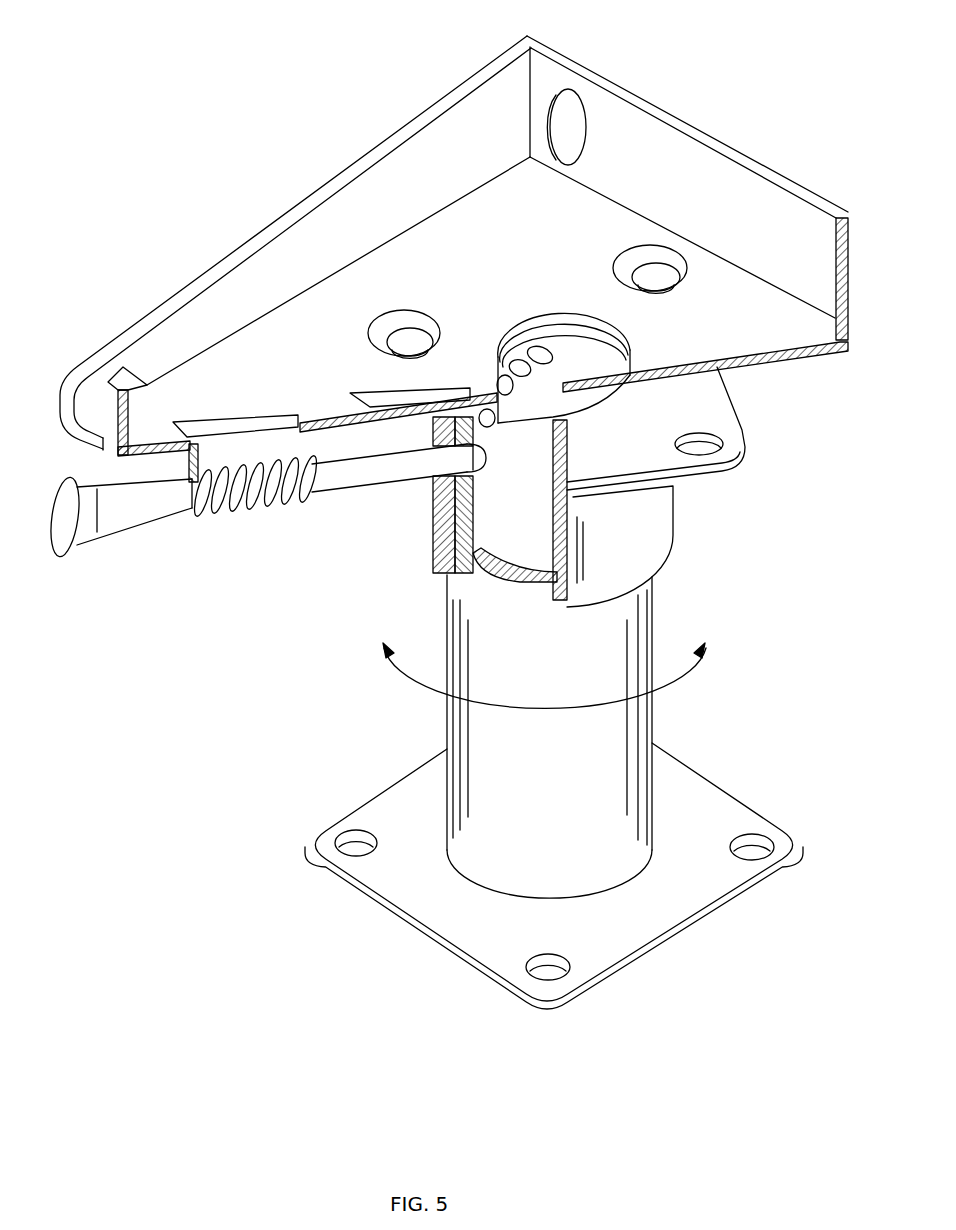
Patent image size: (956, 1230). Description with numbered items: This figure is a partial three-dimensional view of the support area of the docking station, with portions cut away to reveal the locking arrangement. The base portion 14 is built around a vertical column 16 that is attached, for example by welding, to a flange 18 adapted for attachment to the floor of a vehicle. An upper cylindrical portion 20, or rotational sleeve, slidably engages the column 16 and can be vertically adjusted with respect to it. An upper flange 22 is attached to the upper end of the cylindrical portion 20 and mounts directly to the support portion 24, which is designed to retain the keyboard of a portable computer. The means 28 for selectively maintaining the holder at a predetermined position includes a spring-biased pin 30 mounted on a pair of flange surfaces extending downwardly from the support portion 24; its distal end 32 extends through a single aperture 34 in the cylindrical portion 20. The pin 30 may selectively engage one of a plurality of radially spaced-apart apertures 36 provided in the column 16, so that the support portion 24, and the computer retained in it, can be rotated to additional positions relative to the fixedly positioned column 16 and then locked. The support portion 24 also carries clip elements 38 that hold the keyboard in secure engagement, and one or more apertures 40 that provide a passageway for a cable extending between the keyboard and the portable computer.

The base portion 14 is at (292, 828).
The vertical column 16 is at (587, 727).
The flange 18 is at (665, 907).
The cylindrical portion 20 is at (657, 502).
The upper flange 22 is at (710, 393).
The support portion 24 is at (648, 150).
The means for selectively maintaining 28 is at (231, 538).
The spring-biased pin 30 is at (127, 517).
The distal end 32 is at (345, 477).
The aperture 34 is at (443, 497).
The apertures 36 is at (495, 420).
The clip elements 38 is at (130, 406).
The apertures 40 is at (575, 97).